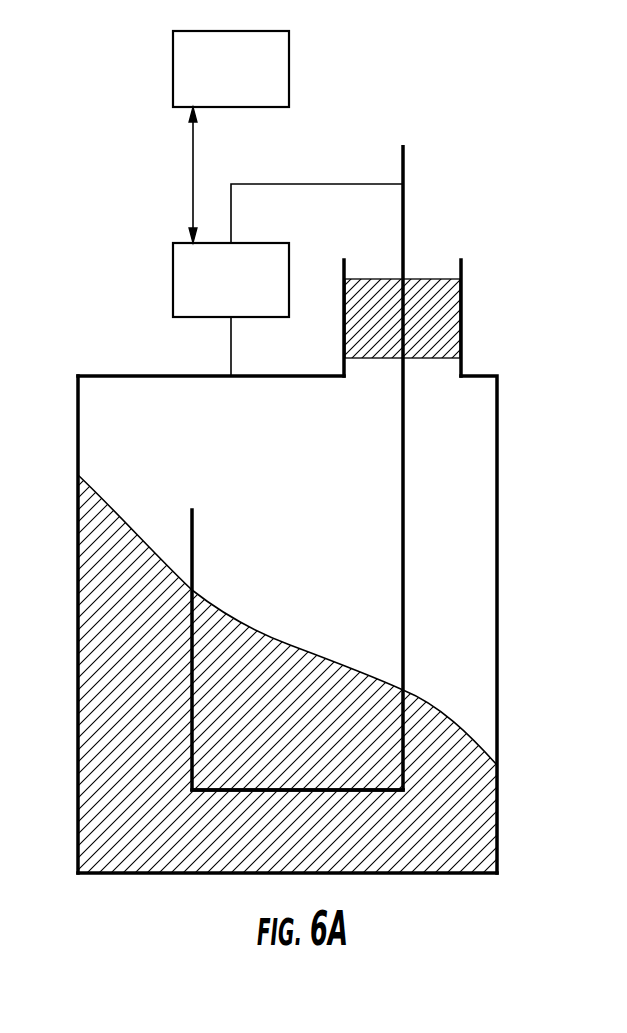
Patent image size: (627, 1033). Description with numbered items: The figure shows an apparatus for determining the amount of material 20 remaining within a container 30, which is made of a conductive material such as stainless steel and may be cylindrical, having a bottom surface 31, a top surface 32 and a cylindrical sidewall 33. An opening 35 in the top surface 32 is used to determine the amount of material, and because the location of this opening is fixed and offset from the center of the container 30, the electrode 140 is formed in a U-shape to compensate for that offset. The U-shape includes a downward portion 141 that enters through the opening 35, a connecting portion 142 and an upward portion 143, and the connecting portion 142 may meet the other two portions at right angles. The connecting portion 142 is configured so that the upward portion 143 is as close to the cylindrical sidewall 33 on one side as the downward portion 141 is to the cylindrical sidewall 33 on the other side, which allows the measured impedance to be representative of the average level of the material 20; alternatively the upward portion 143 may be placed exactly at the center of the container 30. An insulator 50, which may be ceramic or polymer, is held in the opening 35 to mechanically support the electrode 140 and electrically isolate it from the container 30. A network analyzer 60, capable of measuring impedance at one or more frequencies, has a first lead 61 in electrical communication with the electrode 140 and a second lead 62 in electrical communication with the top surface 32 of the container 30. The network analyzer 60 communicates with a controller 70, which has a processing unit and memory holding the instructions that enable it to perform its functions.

The material 20 is at (112, 768).
The container 30 is at (529, 432).
The bottom surface 31 is at (400, 875).
The top surface 32 is at (155, 375).
The cylindrical sidewall 33 is at (78, 489).
The opening 35 is at (455, 236).
The insulator 50 is at (462, 316).
The network analyzer 60 is at (243, 289).
The first lead 61 is at (352, 184).
The second lead 62 is at (231, 364).
The controller 70 is at (243, 81).
The electrode 140 is at (442, 533).
The downward portion 141 is at (403, 508).
The connecting portion 142 is at (311, 786).
The upward portion 143 is at (192, 545).